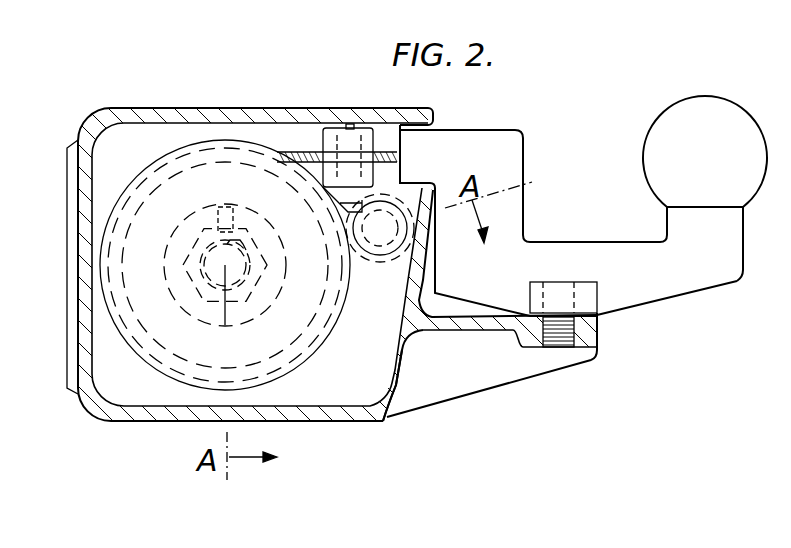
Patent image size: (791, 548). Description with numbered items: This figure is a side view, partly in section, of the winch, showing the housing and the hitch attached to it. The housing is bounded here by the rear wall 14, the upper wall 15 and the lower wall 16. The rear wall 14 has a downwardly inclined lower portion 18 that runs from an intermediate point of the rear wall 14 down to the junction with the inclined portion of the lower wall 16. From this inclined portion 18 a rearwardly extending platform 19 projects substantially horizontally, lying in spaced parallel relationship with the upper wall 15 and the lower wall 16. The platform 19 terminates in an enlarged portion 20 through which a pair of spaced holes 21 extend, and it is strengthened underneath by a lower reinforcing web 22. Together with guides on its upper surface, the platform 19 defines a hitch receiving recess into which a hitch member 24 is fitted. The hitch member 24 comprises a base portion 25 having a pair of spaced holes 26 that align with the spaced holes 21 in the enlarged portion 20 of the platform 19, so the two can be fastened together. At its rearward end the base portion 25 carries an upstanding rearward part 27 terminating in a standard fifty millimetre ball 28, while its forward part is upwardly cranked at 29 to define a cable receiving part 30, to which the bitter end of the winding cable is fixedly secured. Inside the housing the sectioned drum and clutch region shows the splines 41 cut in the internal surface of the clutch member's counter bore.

The rear wall 14 is at (438, 224).
The upper wall 15 is at (273, 108).
The lower wall 16 is at (312, 413).
The downwardly inclined lower portion 18 is at (408, 363).
The rearwardly extending platform 19 is at (510, 322).
The enlarged portion 20 is at (587, 338).
The spaced holes 21 is at (593, 358).
The lower reinforcing web 22 is at (478, 377).
The hitch member 24 is at (738, 278).
The base portion 25 is at (665, 288).
The spaced holes 26 is at (577, 301).
The upstanding rearward part 27 is at (683, 216).
The ball 28 is at (657, 173).
The upwardly cranked part 29 is at (527, 185).
The cable receiving part 30 is at (427, 152).
The splines 41 is at (233, 243).